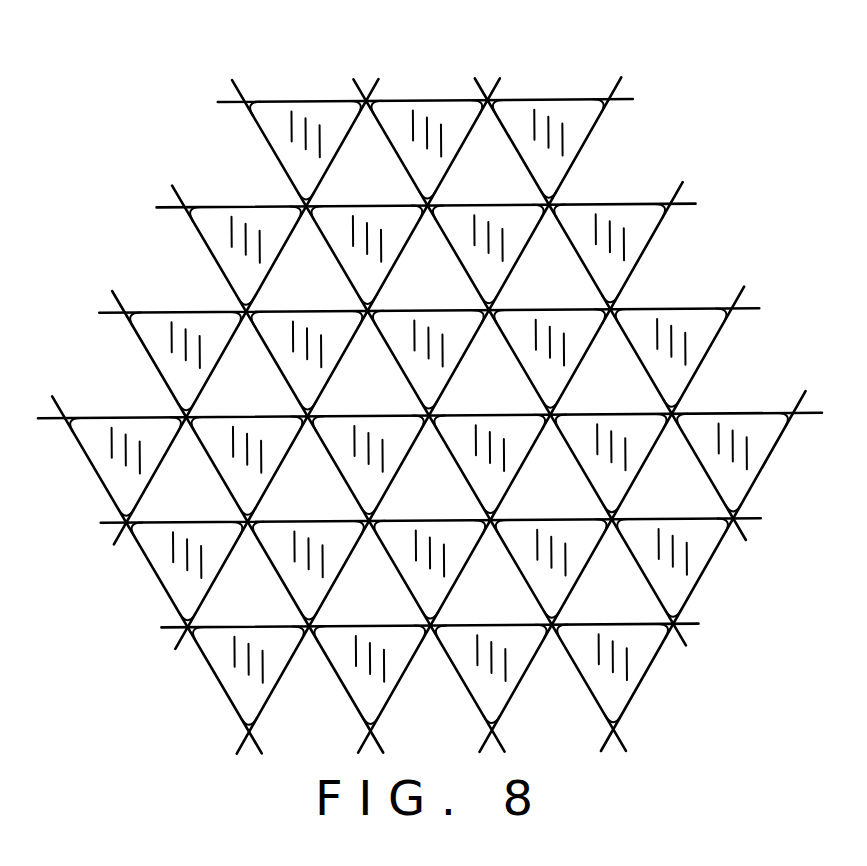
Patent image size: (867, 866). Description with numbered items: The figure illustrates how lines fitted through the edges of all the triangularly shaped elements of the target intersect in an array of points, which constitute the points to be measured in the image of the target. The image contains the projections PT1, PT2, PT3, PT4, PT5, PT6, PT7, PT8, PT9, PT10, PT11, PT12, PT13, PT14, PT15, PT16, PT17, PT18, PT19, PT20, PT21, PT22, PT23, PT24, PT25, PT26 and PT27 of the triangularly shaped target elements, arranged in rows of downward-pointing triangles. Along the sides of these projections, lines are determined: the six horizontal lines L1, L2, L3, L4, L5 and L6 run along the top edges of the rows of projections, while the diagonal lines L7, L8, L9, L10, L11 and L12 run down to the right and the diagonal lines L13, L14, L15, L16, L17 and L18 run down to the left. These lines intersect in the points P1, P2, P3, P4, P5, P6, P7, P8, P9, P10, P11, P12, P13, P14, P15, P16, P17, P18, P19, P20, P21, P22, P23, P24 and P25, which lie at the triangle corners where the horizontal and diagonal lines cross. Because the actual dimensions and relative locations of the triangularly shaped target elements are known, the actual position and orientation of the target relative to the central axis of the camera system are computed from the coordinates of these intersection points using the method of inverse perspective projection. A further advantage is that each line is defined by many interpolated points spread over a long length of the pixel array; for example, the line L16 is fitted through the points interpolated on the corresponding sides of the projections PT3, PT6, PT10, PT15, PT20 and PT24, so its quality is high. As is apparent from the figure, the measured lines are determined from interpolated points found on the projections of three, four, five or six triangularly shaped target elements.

The line L1 is at (227, 100).
The line L2 is at (162, 205).
The line L3 is at (104, 311).
The line L4 is at (45, 415).
The line L5 is at (104, 521).
The line L6 is at (163, 626).
The line L7 is at (53, 394).
The line L8 is at (114, 289).
The line L9 is at (175, 184).
The line L10 is at (236, 79).
The line L11 is at (357, 79).
The line L12 is at (479, 79).
The line L13 is at (806, 394).
The line L14 is at (745, 289).
The line L15 is at (684, 184).
The line L16 is at (623, 79).
The line L17 is at (503, 78).
The line L18 is at (380, 79).
The intersection point P1 is at (368, 106).
The intersection point P2 is at (490, 106).
The intersection point P3 is at (308, 211).
The intersection point P4 is at (430, 211).
The intersection point P5 is at (551, 211).
The intersection point P6 is at (247, 316).
The intersection point P7 is at (369, 316).
The intersection point P8 is at (490, 316).
The intersection point P9 is at (612, 316).
The intersection point P10 is at (187, 421).
The intersection point P11 is at (308, 421).
The intersection point P12 is at (430, 421).
The intersection point P13 is at (551, 421).
The intersection point P14 is at (672, 421).
The intersection point P15 is at (126, 527).
The intersection point P16 is at (247, 527).
The intersection point P17 is at (369, 527).
The intersection point P18 is at (490, 527).
The intersection point P19 is at (609, 527).
The intersection point P20 is at (733, 527).
The intersection point P21 is at (190, 632).
The intersection point P22 is at (310, 632).
The intersection point P23 is at (431, 632).
The intersection point P24 is at (552, 632).
The intersection point P25 is at (674, 632).
The projection of triangularly shaped element PT1 is at (318, 100).
The projection of triangularly shaped element PT2 is at (454, 100).
The projection of triangularly shaped element PT3 is at (580, 100).
The projection of triangularly shaped element PT4 is at (263, 205).
The projection of triangularly shaped element PT5 is at (389, 205).
The projection of triangularly shaped element PT6 is at (515, 205).
The projection of triangularly shaped element PT7 is at (640, 205).
The projection of triangularly shaped element PT8 is at (203, 310).
The projection of triangularly shaped element PT9 is at (333, 310).
The projection of triangularly shaped element PT10 is at (458, 310).
The projection of triangularly shaped element PT11 is at (582, 310).
The projection of triangularly shaped element PT12 is at (702, 310).
The projection of triangularly shaped element PT13 is at (153, 415).
The projection of triangularly shaped element PT14 is at (281, 415).
The projection of triangularly shaped element PT15 is at (403, 415).
The projection of triangularly shaped element PT16 is at (523, 415).
The projection of triangularly shaped element PT17 is at (641, 415).
The projection of triangularly shaped element PT18 is at (770, 413).
The projection of triangularly shaped element PT19 is at (227, 520).
The projection of triangularly shaped element PT20 is at (344, 520).
The projection of triangularly shaped element PT21 is at (464, 520).
The projection of triangularly shaped element PT22 is at (584, 520).
The projection of triangularly shaped element PT23 is at (706, 520).
The projection of triangularly shaped element PT24 is at (249, 662).
The projection of triangularly shaped element PT25 is at (404, 625).
The projection of triangularly shaped element PT26 is at (524, 625).
The projection of triangularly shaped element PT27 is at (646, 625).